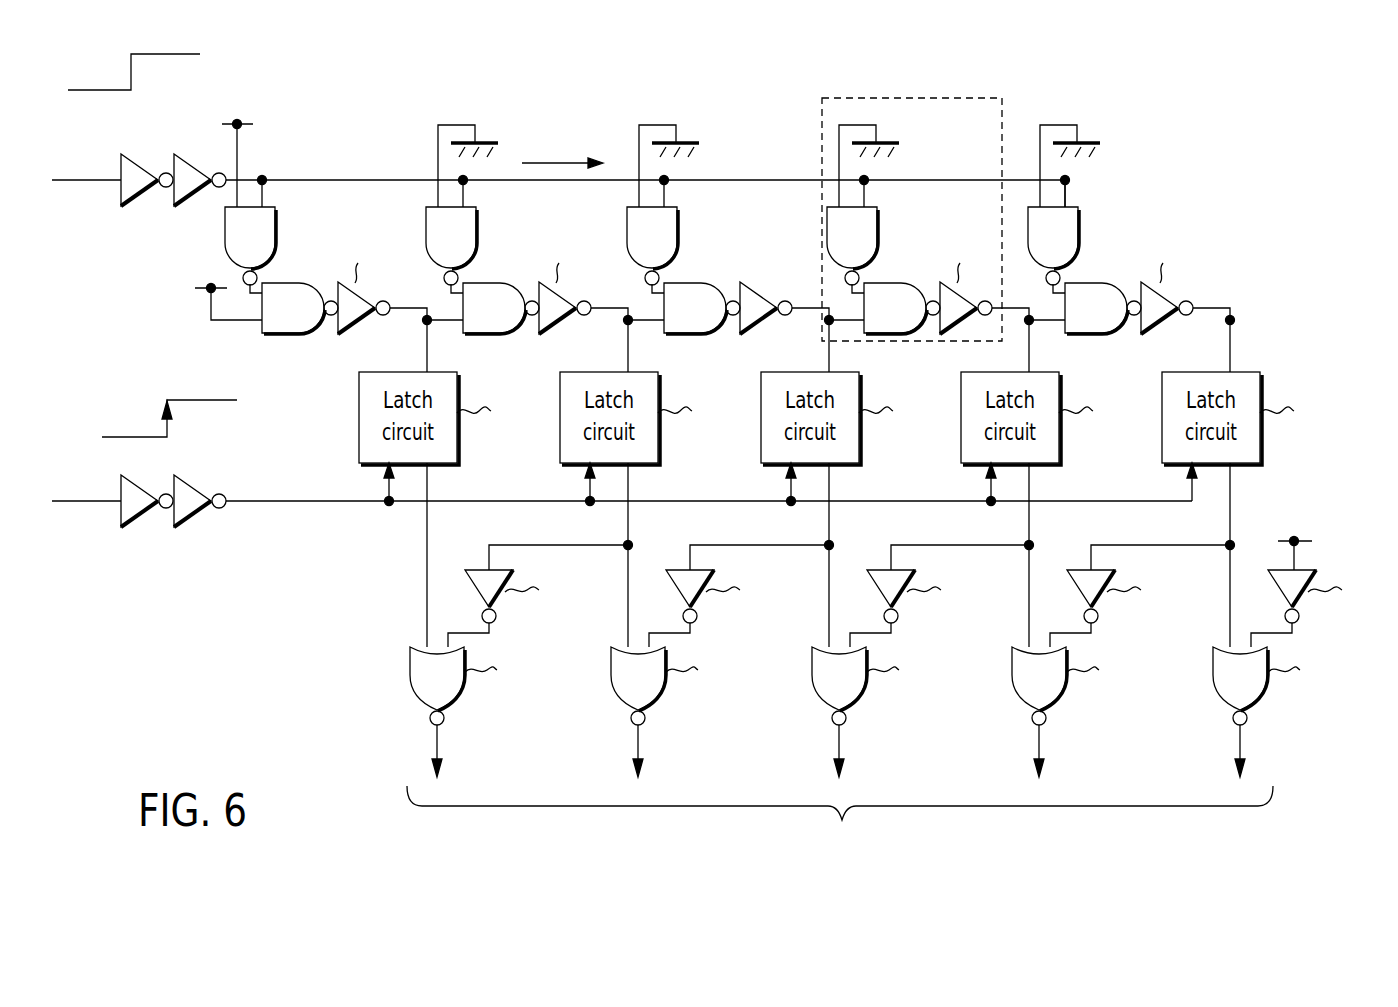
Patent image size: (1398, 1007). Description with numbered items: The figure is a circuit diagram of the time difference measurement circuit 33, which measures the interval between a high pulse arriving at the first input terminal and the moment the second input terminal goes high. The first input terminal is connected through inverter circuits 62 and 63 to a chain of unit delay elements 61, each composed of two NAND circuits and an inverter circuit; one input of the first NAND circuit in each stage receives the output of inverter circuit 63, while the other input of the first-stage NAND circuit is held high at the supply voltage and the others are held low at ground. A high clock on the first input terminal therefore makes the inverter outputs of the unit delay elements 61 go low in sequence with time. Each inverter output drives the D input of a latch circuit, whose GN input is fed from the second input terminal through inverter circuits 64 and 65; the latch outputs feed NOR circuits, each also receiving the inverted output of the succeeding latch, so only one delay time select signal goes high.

The time difference measurement circuit 33 is at (716, 454).
The unit delay element 61 is at (966, 98).
The inverter circuit 62 is at (137, 153).
The inverter circuit 63 is at (193, 153).
The inverter circuit 64 is at (138, 527).
The inverter circuit 65 is at (194, 527).